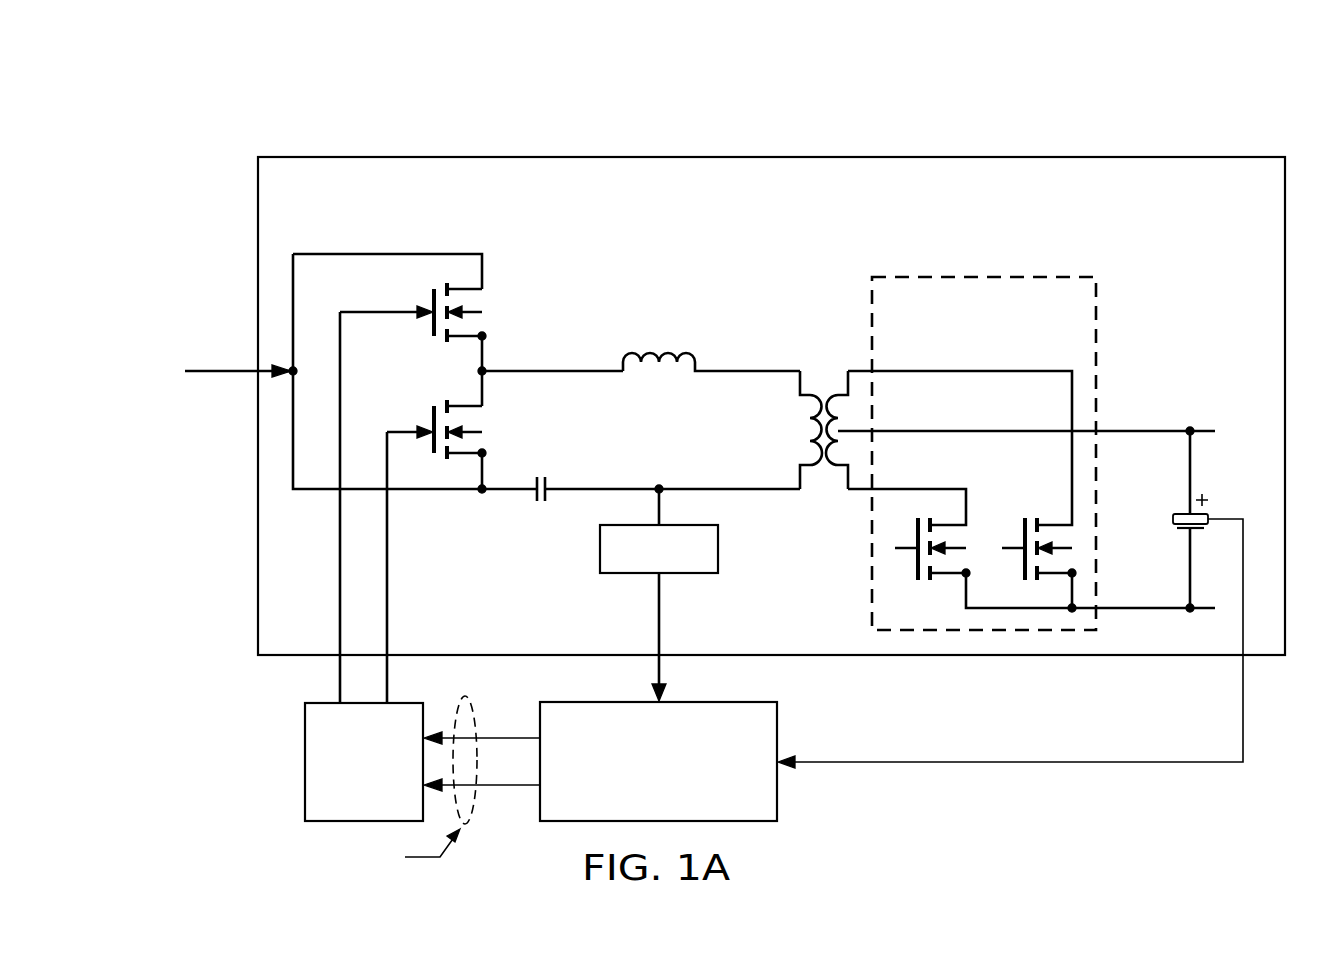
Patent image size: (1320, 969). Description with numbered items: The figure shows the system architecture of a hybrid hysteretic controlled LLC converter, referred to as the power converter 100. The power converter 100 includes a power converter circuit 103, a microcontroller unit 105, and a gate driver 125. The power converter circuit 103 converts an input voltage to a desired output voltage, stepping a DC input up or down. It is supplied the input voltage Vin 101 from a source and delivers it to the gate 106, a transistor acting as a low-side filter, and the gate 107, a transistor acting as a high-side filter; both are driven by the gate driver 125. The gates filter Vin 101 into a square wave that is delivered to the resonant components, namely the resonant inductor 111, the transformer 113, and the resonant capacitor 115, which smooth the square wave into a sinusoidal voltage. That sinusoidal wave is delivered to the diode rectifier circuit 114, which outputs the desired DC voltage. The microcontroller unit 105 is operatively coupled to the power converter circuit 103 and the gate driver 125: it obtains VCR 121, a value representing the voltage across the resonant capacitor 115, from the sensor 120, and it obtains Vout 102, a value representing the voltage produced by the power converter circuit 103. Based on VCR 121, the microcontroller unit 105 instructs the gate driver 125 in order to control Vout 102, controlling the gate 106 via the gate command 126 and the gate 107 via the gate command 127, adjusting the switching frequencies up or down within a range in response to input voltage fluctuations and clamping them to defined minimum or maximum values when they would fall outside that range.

The power converter 100 is at (1042, 122).
The input voltage Vin 101 is at (220, 369).
The output voltage Vout 102 is at (1012, 764).
The power converter circuit 103 is at (793, 252).
The microcontroller unit 105 is at (780, 795).
The gate 106 is at (430, 417).
The gate 107 is at (430, 300).
The resonant inductor 111 is at (650, 351).
The transformer 113 is at (810, 422).
The diode rectifier circuit 114 is at (1028, 266).
The resonant capacitor 115 is at (538, 503).
The sensor 120 is at (720, 545).
The VCR 121 is at (655, 597).
The gate driver 125 is at (305, 760).
The gate command 126 is at (518, 786).
The gate command 127 is at (518, 737).